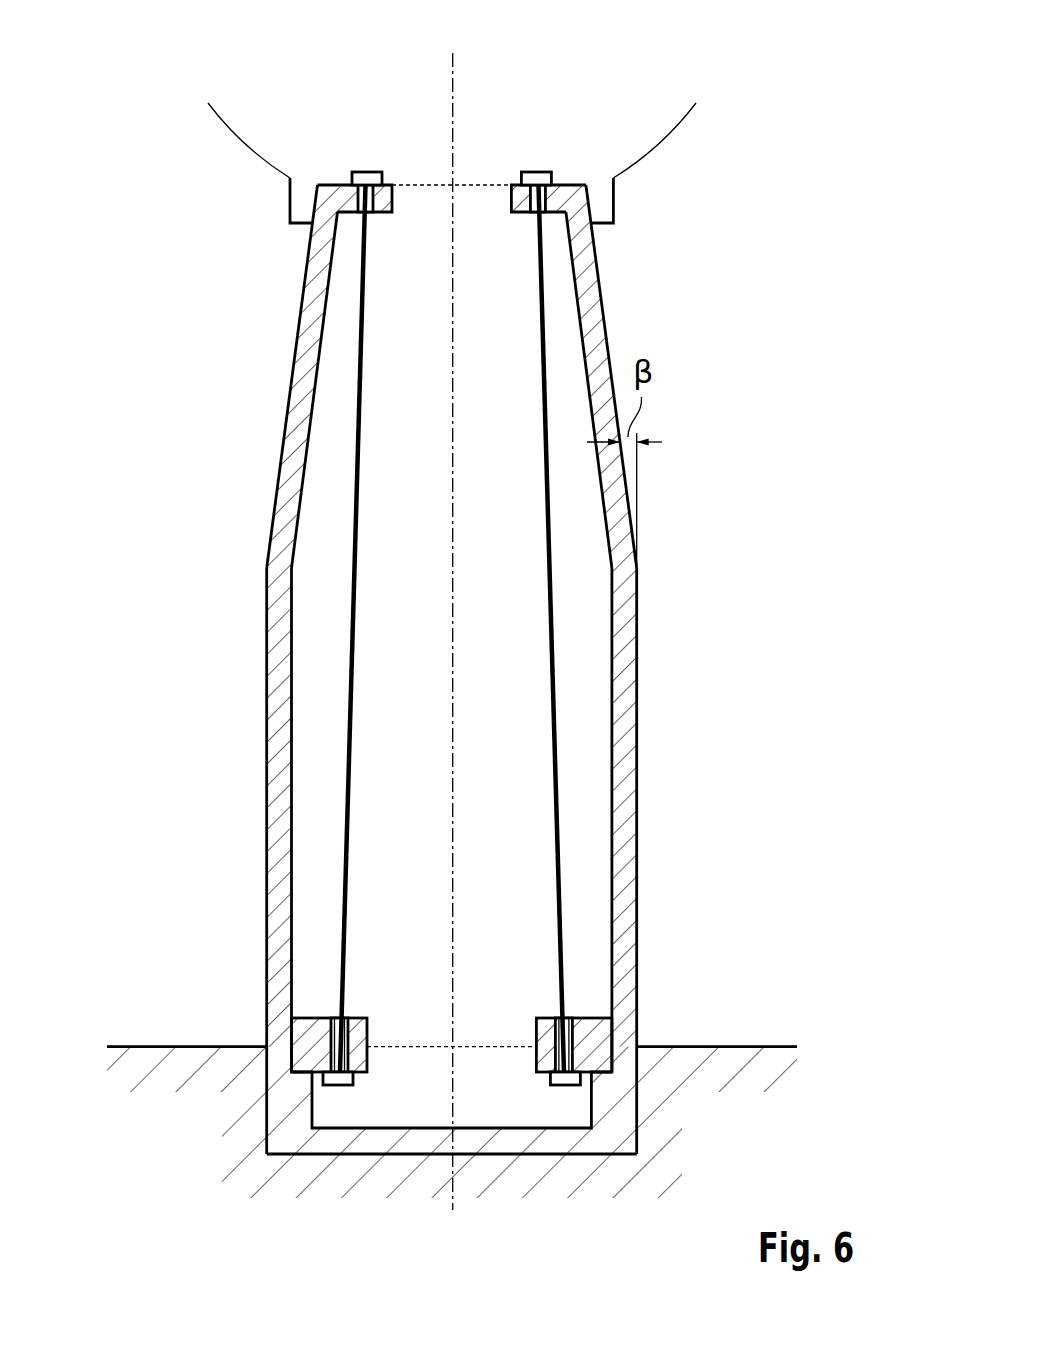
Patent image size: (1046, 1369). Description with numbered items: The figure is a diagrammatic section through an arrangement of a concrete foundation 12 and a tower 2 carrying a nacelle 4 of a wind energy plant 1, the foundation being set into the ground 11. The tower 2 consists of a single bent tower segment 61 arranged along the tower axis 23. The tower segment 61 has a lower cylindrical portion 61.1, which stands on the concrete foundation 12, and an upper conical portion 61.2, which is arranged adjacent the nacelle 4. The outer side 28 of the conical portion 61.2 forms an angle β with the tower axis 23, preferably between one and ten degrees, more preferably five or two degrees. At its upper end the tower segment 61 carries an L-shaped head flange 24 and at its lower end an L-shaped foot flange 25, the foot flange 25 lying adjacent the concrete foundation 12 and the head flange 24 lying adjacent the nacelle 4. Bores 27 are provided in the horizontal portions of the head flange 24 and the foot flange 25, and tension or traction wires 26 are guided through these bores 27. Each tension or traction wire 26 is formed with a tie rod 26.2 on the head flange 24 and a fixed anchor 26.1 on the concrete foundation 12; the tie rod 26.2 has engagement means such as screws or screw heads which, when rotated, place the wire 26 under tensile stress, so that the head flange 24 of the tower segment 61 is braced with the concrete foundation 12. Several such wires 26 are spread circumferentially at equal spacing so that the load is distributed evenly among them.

The wind energy plant 1 is at (660, 70).
The tower 2 is at (147, 420).
The nacelle 4 is at (688, 123).
The ground 11 is at (755, 1046).
The concrete foundation 12 is at (483, 1142).
The tower axis 23 is at (453, 68).
The head flange 24 is at (522, 213).
The foot flange 25 is at (543, 1020).
The tension or traction wires 26 is at (545, 340).
The fixed anchor 26.1 is at (333, 1087).
The tie rod 26.2 is at (360, 171).
The bores 27 is at (377, 171).
The surface / outer side of the conical portion 28 is at (600, 283).
The tower segment 61 is at (424, 669).
The cylindrical portion 61.1 is at (273, 730).
The conical portion 61.2 is at (307, 313).